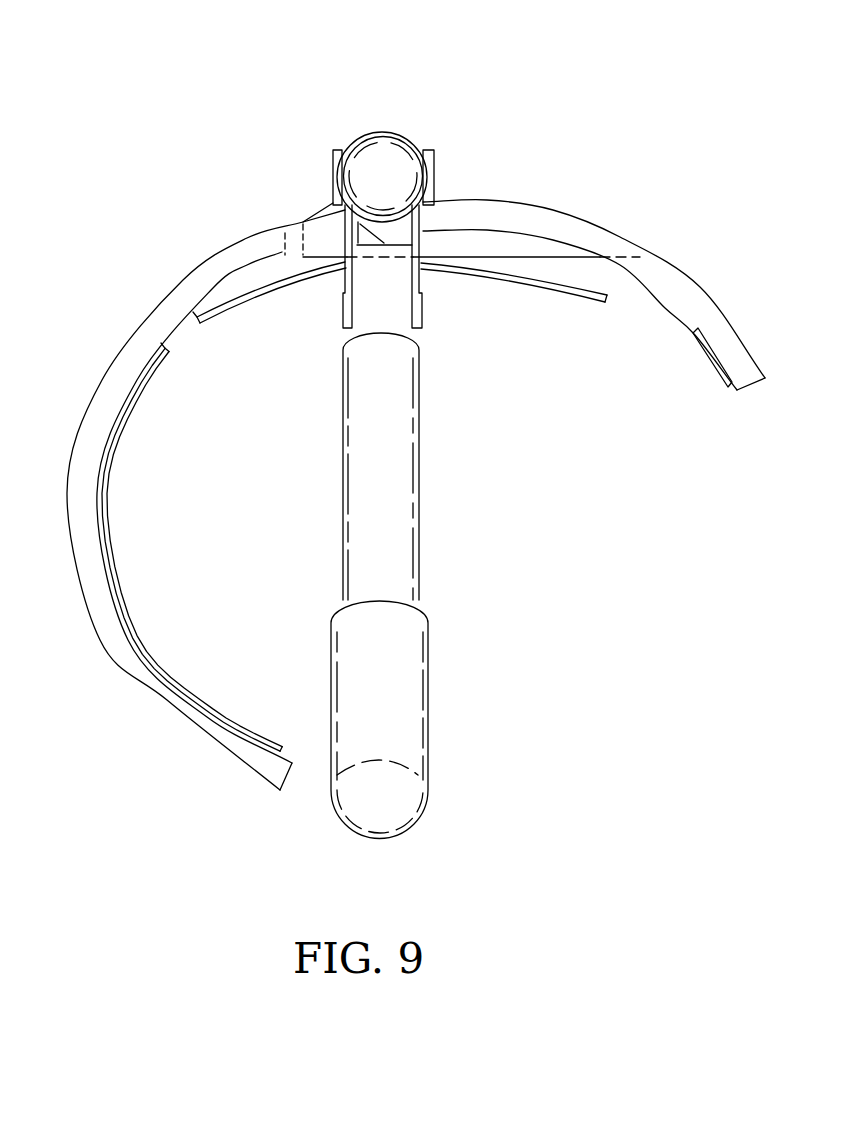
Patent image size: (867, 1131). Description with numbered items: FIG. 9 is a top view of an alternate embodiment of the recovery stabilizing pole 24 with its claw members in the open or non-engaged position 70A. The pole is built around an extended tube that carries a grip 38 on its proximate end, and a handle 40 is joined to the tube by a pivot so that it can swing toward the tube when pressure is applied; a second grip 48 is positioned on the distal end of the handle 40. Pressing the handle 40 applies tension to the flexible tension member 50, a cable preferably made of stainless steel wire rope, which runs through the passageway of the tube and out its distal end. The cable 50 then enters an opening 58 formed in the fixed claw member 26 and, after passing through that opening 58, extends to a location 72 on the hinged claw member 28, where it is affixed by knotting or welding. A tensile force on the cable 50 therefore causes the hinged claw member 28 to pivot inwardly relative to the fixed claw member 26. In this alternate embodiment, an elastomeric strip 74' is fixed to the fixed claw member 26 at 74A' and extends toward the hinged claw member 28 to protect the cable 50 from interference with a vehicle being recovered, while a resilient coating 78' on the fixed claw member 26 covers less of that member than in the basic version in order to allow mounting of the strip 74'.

The recovery stabilizing pole 24 is at (151, 127).
The fixed claw member 26 is at (100, 642).
The hinged claw member 28 is at (759, 383).
The grip 38 is at (365, 142).
The handle 40 is at (347, 485).
The grip 48 is at (428, 683).
The flexible tension member 50 is at (318, 210).
The opening 58 is at (298, 247).
The open or non-engaged position 70A is at (432, 365).
The location 72 is at (640, 258).
The elastomeric strip 74' is at (514, 317).
The fixing location of elastomeric strip 74A' is at (269, 313).
The resilient coating 78' is at (192, 547).